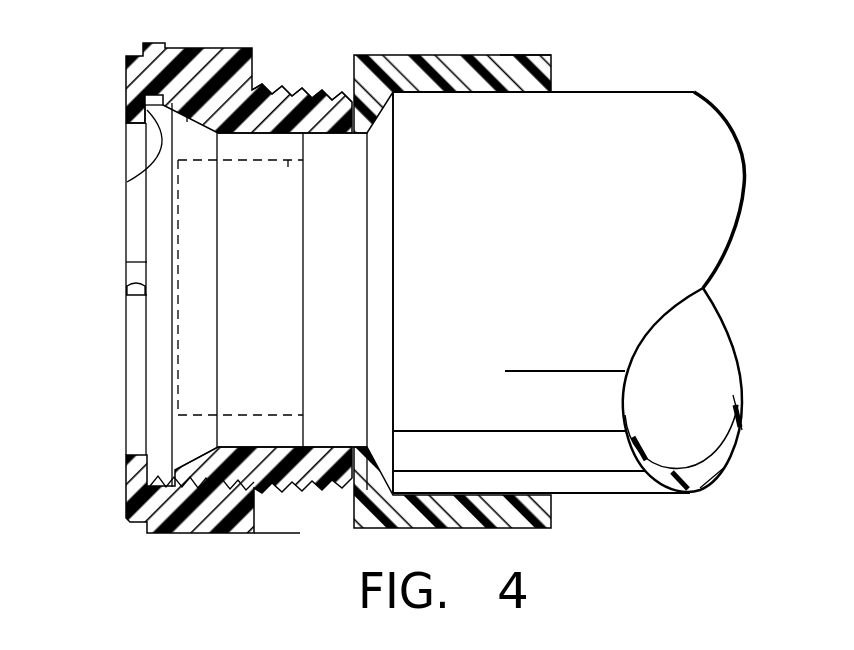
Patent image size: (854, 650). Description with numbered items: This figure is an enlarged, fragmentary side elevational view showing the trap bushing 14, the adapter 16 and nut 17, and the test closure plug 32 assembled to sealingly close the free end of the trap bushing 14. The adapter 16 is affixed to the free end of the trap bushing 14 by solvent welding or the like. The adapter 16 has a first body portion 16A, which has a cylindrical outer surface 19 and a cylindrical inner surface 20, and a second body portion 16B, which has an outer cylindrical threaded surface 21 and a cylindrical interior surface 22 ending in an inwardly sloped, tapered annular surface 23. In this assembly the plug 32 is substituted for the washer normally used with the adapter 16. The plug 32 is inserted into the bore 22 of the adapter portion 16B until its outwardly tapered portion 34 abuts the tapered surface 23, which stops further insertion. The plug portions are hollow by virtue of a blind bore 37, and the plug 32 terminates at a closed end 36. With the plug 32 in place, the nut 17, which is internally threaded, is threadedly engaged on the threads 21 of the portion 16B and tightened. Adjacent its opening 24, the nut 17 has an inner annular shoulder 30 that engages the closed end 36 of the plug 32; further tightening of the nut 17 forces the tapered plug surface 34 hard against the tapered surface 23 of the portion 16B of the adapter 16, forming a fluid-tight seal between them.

The trap bushing 14 is at (600, 117).
The adapter 16 is at (505, 528).
The first body portion 16A is at (508, 55).
The second body portion 16B is at (314, 487).
The nut 17 is at (180, 47).
The cylindrical outer surface 19 is at (424, 55).
The cylindrical inner surface 20 is at (448, 490).
The outer cylindrical threaded surface 21 is at (265, 92).
The cylindrical interior surface 22 is at (316, 134).
The tapered annular surface 23 is at (202, 466).
The opening 24 is at (135, 122).
The inner annular shoulder 30 is at (131, 181).
The plug 32 is at (145, 262).
The outwardly tapered portion 34 is at (189, 104).
The closed end 36 is at (147, 353).
The blind bore 37 is at (290, 165).